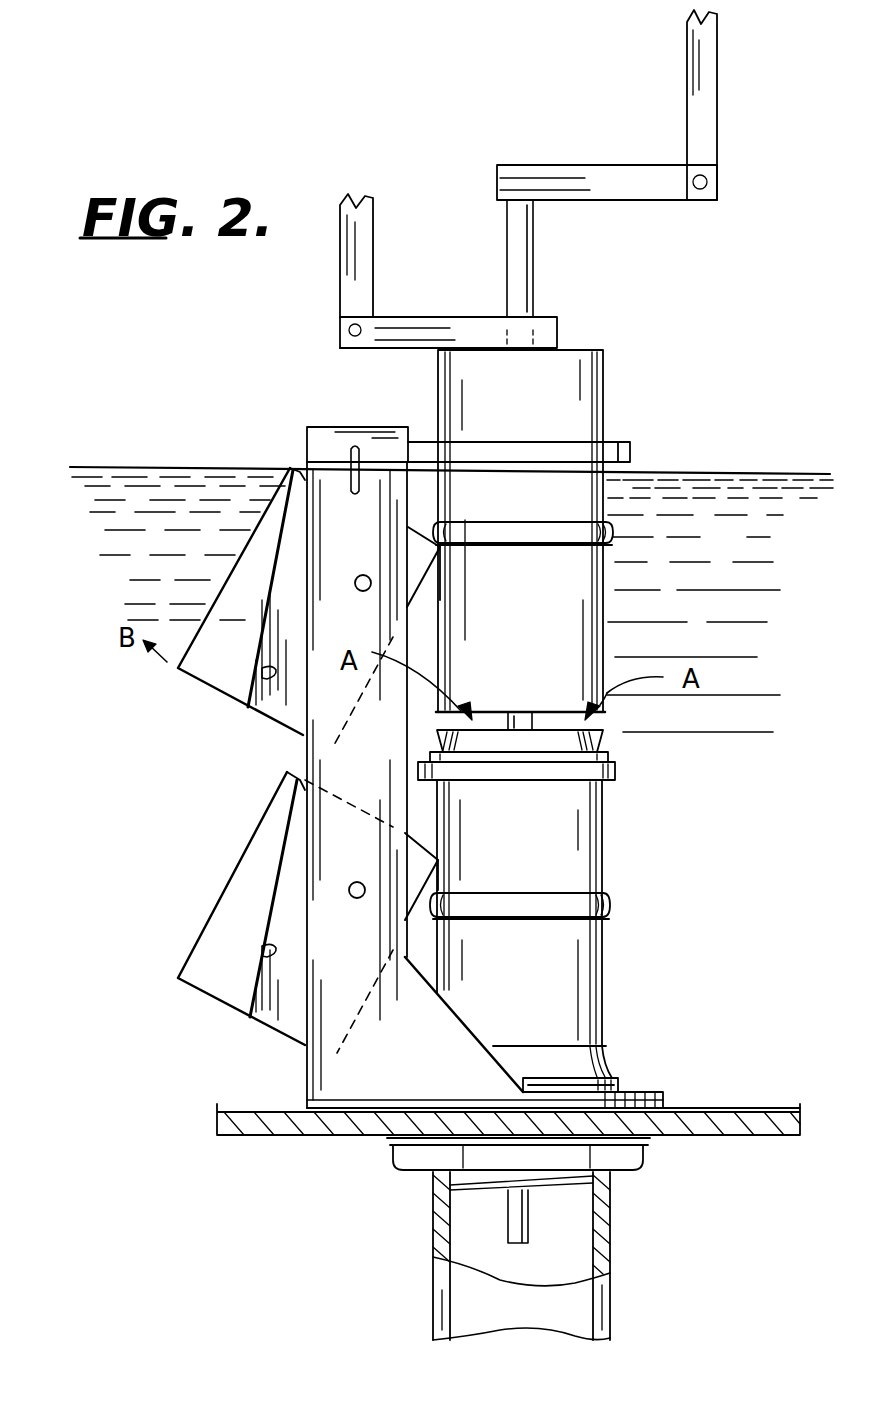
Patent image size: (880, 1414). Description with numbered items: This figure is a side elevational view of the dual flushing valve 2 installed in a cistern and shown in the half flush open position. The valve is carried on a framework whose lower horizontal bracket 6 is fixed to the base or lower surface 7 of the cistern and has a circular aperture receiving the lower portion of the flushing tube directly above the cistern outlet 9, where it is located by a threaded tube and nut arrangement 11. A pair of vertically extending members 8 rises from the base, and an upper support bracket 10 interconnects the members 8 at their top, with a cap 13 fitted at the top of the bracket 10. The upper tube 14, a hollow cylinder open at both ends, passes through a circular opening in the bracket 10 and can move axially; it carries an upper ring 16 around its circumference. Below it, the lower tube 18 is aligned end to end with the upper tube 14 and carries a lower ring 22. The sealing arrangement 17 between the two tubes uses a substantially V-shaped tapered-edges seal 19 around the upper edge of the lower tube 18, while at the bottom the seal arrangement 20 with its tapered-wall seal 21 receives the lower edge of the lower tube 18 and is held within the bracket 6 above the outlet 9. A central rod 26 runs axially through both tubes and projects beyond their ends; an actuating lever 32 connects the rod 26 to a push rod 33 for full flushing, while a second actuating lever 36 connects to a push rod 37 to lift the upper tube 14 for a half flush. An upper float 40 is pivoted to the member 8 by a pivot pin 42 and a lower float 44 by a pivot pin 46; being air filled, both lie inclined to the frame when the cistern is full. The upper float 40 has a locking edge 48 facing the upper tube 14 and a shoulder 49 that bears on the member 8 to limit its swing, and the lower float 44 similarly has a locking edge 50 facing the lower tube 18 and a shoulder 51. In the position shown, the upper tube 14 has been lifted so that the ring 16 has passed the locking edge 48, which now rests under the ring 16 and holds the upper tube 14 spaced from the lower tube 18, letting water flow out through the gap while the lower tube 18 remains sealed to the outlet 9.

The dual flushing valve 2 is at (253, 798).
The lower horizontal bracket 6 is at (666, 1100).
The base or lower surface of the cistern 7 is at (747, 1136).
The vertically extending member 8 is at (345, 750).
The outlet of the cistern 9 is at (610, 1240).
The upper support bracket 10 is at (630, 445).
The threaded tube and nut arrangement 11 is at (632, 1160).
The cap 13 is at (318, 433).
The upper tube 14 is at (605, 627).
The upper ring 16 is at (613, 533).
The sealing arrangement 17 is at (627, 723).
The lower tube 18 is at (582, 823).
The tapered-edges seal 19 is at (615, 763).
The seal arrangement 20 is at (628, 1074).
The tapered-wall seal 21 is at (608, 1052).
The lower ring 22 is at (608, 903).
The central rod 26 is at (525, 275).
The actuating lever 32 is at (572, 170).
The push rod 33 is at (693, 100).
The actuating lever 36 is at (438, 330).
The push rod 37 is at (347, 288).
The upper float 40 is at (225, 608).
The pivot pin 42 is at (363, 575).
The lower float 44 is at (233, 913).
The pivot pin 46 is at (343, 890).
The locking edge 48 is at (447, 545).
The shoulder 49 is at (262, 672).
The locking edge 50 is at (435, 853).
The shoulder 51 is at (277, 948).